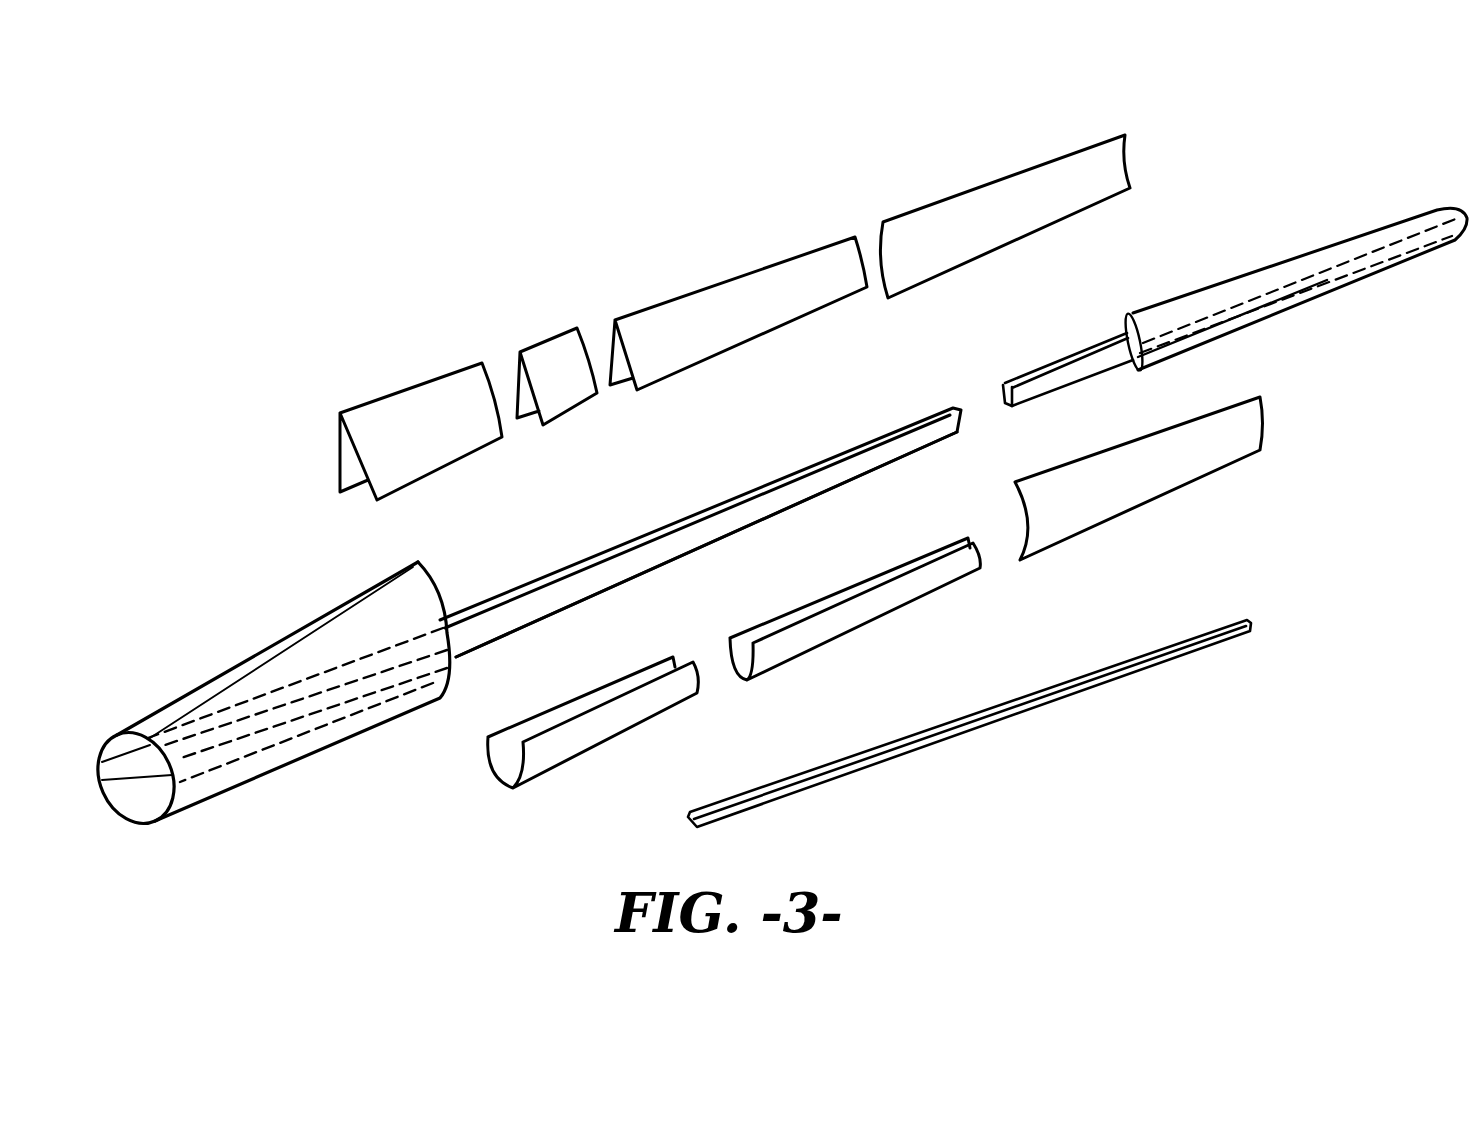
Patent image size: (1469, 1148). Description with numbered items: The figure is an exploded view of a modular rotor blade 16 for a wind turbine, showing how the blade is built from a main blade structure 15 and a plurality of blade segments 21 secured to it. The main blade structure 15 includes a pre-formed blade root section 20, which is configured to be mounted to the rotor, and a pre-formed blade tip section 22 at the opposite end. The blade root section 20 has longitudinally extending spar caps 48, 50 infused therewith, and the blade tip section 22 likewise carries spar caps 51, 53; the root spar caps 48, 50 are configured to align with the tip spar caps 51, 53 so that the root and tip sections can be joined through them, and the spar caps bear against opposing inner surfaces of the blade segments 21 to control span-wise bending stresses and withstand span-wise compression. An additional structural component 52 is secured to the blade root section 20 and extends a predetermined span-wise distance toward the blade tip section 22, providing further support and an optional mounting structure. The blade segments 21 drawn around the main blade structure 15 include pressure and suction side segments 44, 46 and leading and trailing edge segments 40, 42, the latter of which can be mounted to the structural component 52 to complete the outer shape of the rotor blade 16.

The main blade structure 15 is at (263, 628).
The rotor blade 16 is at (1197, 150).
The blade root section 20 is at (265, 782).
The blade segment 21 is at (373, 393).
The blade tip section 22 is at (1307, 297).
The leading edge segment 40 is at (603, 747).
The trailing edge segment 42 is at (418, 377).
The pressure side segment 44 is at (1000, 177).
The suction side segment 46 is at (1148, 505).
The spar cap 48 is at (500, 605).
The spar cap 50 is at (693, 540).
The spar cap 51 is at (1005, 383).
The structural component 52 is at (1078, 690).
The spar cap 53 is at (1060, 387).